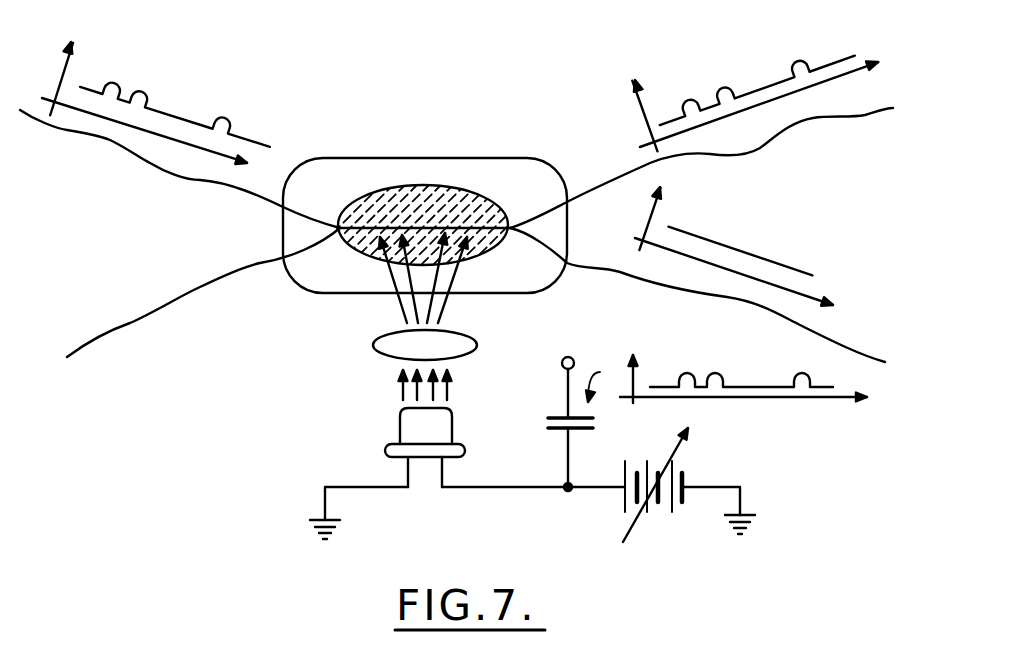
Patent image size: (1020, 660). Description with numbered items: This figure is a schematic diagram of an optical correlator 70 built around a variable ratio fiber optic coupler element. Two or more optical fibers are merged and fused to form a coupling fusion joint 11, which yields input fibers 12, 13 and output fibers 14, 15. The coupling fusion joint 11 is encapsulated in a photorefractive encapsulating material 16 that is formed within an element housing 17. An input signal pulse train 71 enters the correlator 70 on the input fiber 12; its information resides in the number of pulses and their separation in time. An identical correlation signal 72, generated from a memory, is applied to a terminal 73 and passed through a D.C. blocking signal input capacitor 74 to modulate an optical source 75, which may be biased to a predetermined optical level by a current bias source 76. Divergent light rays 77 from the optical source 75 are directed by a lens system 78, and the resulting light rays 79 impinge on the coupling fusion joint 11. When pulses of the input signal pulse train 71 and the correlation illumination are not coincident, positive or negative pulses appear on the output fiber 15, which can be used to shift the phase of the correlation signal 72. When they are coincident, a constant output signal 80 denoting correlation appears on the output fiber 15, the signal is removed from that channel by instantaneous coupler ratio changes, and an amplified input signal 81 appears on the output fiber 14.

The coupling fusion joint 11 is at (397, 222).
The input fiber 12 is at (80, 133).
The input fiber 13 is at (200, 288).
The output fiber 14 is at (813, 120).
The output fiber 15 is at (777, 313).
The encapsulating material 16 is at (467, 188).
The element housing 17 is at (523, 158).
The optical correlator 70 is at (425, 179).
The input signal pulse train 71 is at (143, 92).
The correlation signal 72 is at (685, 370).
The terminal 73 is at (572, 358).
The signal input capacitor 74 is at (595, 425).
The optical source 75 is at (453, 427).
The current bias source 76 is at (672, 510).
The divergent light rays 77 is at (395, 392).
The lens system 78 is at (477, 343).
The light rays 79 is at (392, 302).
The constant output signal 80 is at (787, 267).
The amplified input signal 81 is at (724, 78).